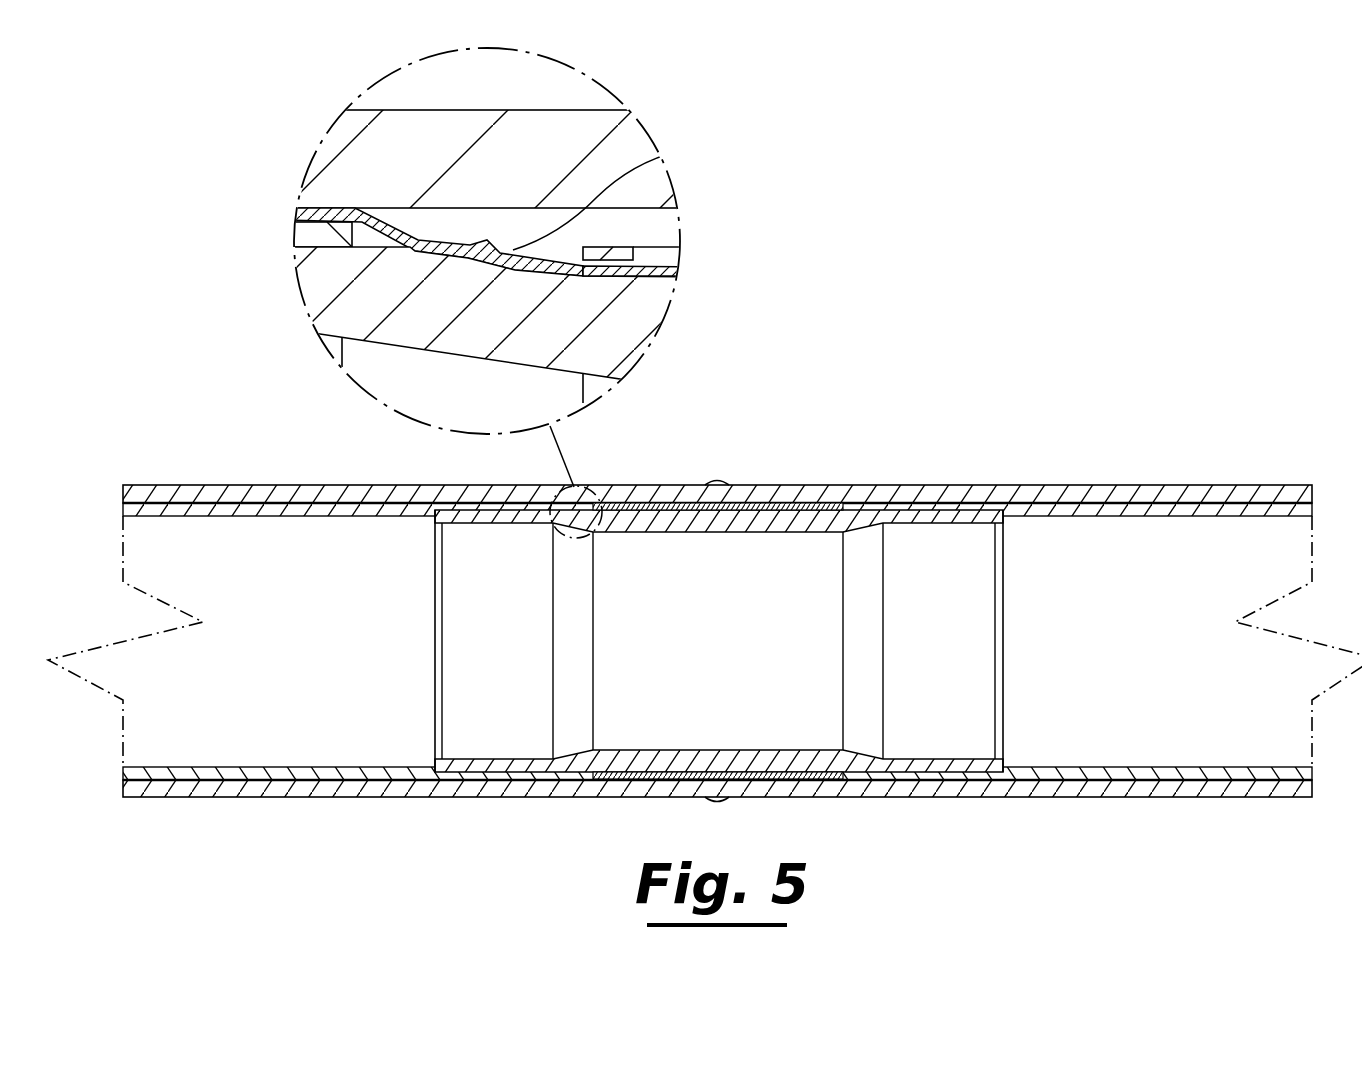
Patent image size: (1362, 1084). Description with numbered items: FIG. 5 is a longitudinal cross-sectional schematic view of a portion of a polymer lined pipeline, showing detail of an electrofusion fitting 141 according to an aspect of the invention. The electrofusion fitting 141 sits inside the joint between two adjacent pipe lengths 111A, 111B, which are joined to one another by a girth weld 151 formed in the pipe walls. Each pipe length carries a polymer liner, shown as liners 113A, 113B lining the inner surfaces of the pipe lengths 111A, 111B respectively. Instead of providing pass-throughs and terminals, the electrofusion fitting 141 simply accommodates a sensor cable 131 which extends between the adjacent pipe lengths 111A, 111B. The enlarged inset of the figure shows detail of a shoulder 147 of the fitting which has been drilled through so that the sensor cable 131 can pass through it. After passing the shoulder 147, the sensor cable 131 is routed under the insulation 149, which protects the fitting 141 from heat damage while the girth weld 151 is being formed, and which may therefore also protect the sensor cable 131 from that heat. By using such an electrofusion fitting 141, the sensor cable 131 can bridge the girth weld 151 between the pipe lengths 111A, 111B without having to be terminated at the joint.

The pipe length 111A is at (233, 790).
The pipe length 111B is at (1271, 495).
The first liner 113A is at (301, 772).
The second liner 113B is at (1046, 512).
The sensor cable 131 is at (233, 503).
The electrofusion fitting 141 is at (940, 553).
The shoulder 147 is at (700, 147).
The insulation 149 is at (802, 505).
The girth weld 151 is at (720, 488).